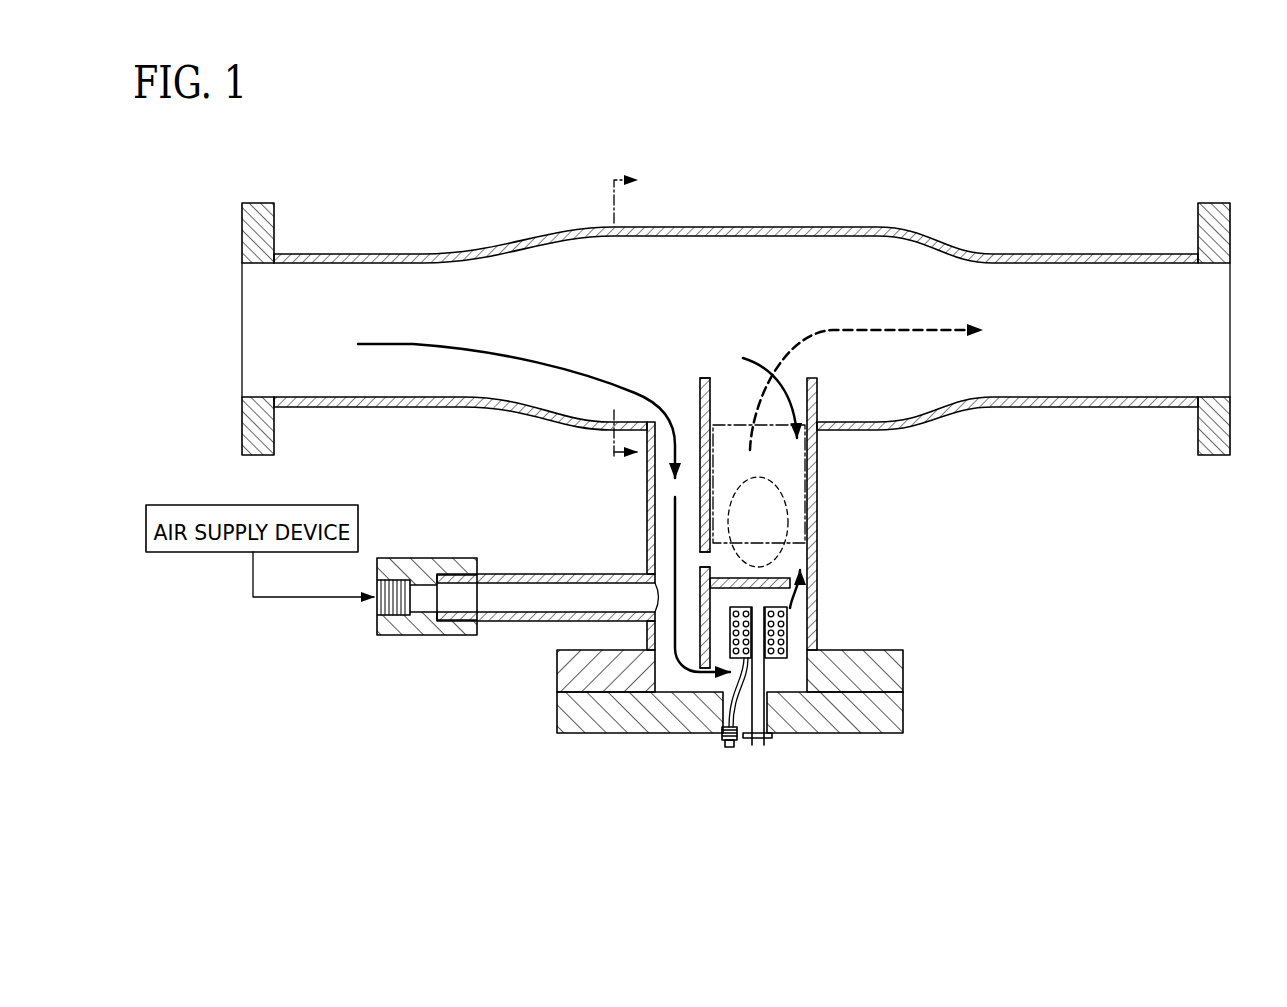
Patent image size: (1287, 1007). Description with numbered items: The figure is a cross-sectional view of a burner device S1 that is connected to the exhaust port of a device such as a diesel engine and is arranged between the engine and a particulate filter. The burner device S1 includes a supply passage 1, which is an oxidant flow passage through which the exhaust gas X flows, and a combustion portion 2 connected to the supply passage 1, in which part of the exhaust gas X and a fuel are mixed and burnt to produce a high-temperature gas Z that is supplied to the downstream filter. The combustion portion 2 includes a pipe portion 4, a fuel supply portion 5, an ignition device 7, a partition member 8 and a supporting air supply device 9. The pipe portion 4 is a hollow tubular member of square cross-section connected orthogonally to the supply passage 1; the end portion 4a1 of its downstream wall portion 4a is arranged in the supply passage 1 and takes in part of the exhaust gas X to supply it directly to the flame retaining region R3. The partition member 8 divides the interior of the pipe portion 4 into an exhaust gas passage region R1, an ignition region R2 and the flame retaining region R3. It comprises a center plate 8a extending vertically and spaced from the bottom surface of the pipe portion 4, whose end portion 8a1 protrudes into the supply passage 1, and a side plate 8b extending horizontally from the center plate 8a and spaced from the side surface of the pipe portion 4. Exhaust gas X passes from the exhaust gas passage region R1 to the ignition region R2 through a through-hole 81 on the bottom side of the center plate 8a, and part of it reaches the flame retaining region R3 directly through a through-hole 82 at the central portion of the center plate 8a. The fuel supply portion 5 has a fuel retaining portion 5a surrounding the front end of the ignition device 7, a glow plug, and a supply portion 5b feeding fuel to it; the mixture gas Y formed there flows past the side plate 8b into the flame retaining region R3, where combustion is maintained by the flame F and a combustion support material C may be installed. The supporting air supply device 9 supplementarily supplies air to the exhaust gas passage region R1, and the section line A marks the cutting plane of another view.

The supply passage 1 is at (415, 250).
The burner device S1 is at (1122, 223).
The section line A- A is at (621, 314).
The exhaust gas X is at (412, 344).
The high-temperature gas Z is at (890, 331).
The combustion portion 2 is at (978, 558).
The pipe portion 4 is at (730, 504).
The wall portion 4a is at (810, 550).
The end portion 4a1 is at (805, 388).
The partition member 8 is at (728, 535).
The center plate 8a is at (697, 482).
The end portion 8a1 is at (708, 380).
The through-hole 82 is at (722, 555).
The side plate 8b is at (782, 583).
The through-hole 81 is at (700, 675).
The combustion support material C is at (807, 450).
The flame F is at (787, 493).
The flame retaining region R3 is at (756, 515).
The mixture gas Y is at (793, 607).
The exhaust gas passage region R1 is at (692, 584).
The ignition region R2 is at (782, 676).
The fuel supply portion 5 is at (769, 713).
The fuel retaining portion 5a is at (782, 641).
The supply portion 5b is at (729, 748).
The ignition device 7 is at (773, 746).
The supporting air supply device 9 is at (390, 644).